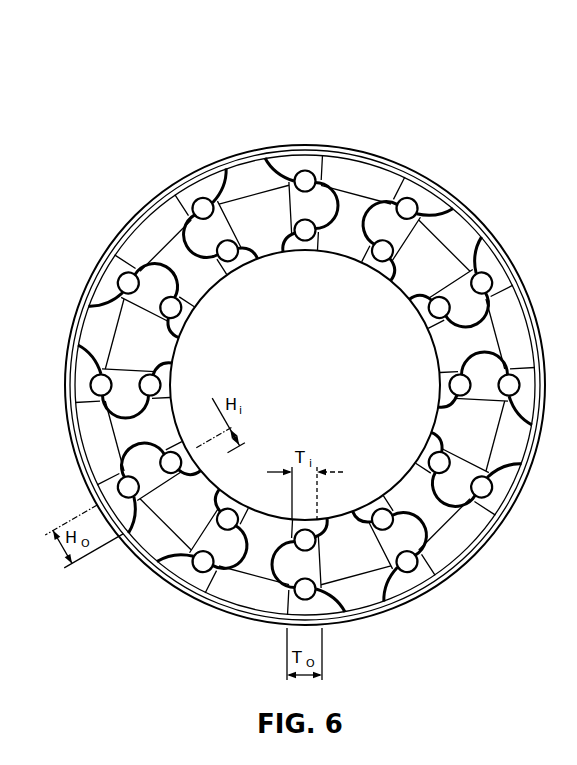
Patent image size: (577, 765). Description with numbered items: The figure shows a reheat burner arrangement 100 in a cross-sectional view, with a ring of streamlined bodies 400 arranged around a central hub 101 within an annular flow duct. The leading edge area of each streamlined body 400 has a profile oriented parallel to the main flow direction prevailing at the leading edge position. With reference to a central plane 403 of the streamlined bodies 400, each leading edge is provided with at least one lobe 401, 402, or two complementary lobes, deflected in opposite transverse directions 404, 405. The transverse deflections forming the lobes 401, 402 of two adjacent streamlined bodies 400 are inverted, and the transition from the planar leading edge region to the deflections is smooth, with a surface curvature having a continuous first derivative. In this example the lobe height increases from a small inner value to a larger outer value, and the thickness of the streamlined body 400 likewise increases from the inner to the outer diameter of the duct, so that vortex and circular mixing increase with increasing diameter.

The reheat burner arrangement 100 is at (321, 360).
The hub 101 is at (325, 395).
The streamlined body 400 is at (492, 270).
The lobe 401 is at (382, 223).
The lobe 402 is at (320, 207).
The central plane 403 is at (260, 307).
The transverse direction 404 is at (411, 531).
The transverse direction 405 is at (447, 484).